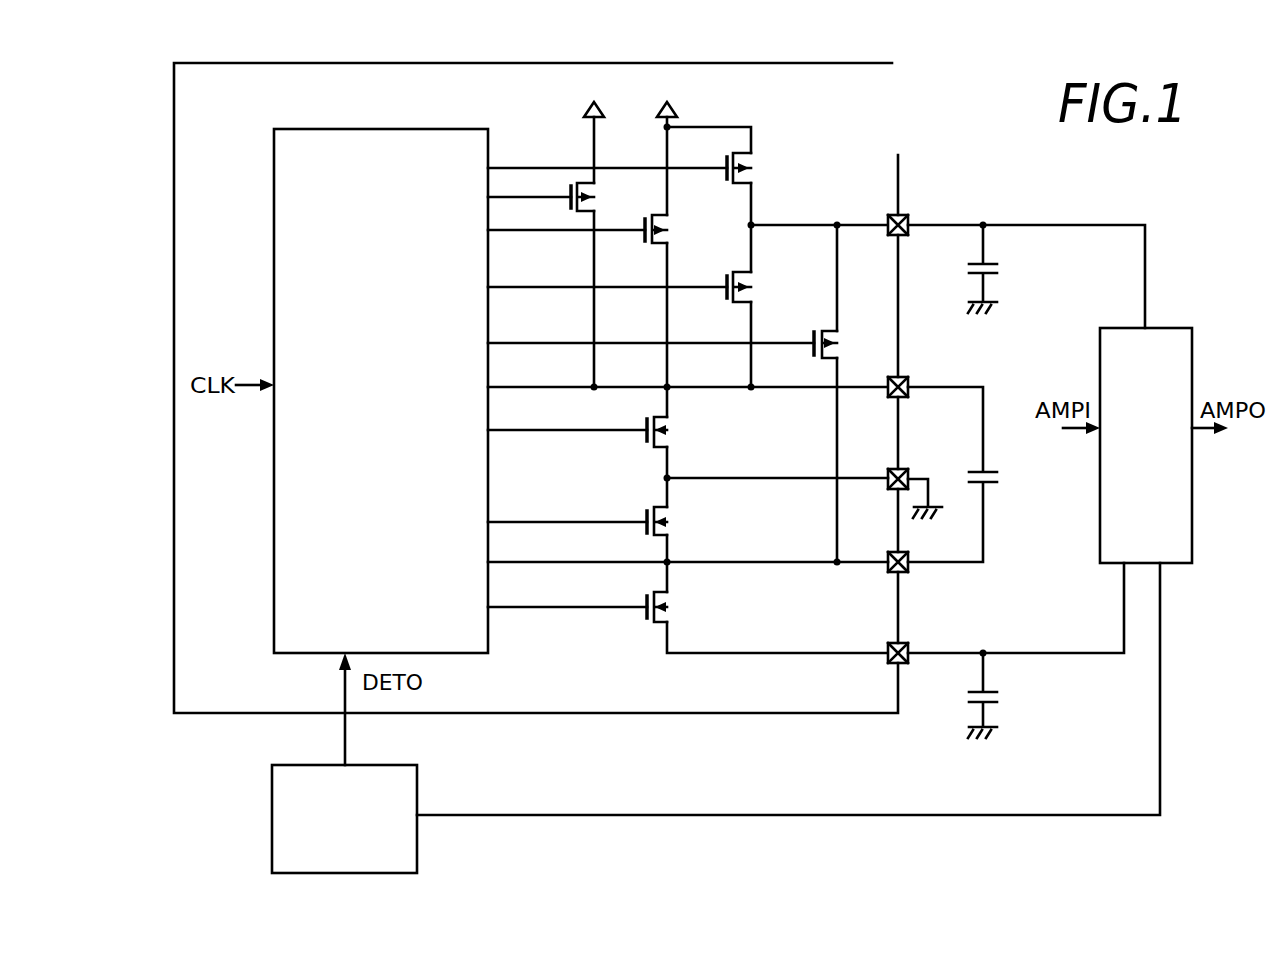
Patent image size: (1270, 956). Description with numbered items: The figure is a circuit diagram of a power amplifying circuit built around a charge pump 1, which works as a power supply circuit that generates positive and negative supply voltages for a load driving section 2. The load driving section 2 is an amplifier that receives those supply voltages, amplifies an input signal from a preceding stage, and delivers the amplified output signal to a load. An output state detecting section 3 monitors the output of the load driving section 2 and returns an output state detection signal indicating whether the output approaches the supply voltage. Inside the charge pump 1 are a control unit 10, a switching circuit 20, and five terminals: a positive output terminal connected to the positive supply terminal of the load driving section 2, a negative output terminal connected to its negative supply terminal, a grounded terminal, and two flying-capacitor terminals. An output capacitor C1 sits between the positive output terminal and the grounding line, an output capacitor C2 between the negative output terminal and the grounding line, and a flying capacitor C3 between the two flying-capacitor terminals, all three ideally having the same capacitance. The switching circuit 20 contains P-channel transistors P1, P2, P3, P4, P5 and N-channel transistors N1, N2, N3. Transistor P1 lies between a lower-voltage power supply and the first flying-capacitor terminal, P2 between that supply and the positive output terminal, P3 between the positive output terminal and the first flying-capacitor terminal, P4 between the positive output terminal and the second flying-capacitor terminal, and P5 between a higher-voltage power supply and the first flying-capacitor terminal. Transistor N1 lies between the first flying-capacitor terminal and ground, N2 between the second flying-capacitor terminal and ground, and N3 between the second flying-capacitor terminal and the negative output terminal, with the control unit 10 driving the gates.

The charge pump 1 is at (437, 63).
The control unit 10 is at (386, 129).
The switching circuit 20 is at (736, 393).
The load driving section 2 is at (1152, 328).
The output state detecting section 3 is at (383, 765).
The P-channel transistor P1 is at (646, 222).
The P-channel transistor P2 is at (726, 164).
The P-channel transistor P3 is at (726, 285).
The P-channel transistor P4 is at (813, 341).
The P-channel transistor P5 is at (580, 180).
The N-channel transistor N1 is at (645, 428).
The N-channel transistor N2 is at (645, 519).
The N-channel transistor N3 is at (634, 597).
The output capacitor C1 is at (1026, 275).
The output capacitor C2 is at (1016, 650).
The flying capacitor C3 is at (970, 474).